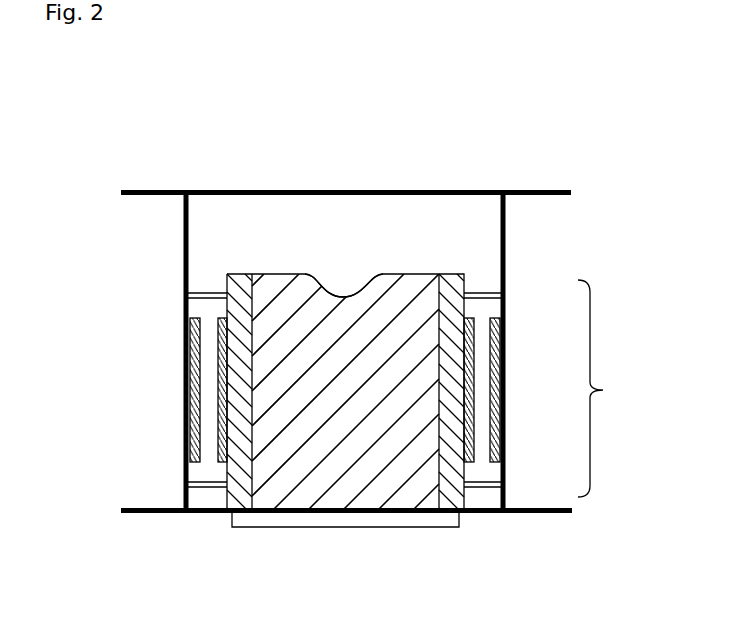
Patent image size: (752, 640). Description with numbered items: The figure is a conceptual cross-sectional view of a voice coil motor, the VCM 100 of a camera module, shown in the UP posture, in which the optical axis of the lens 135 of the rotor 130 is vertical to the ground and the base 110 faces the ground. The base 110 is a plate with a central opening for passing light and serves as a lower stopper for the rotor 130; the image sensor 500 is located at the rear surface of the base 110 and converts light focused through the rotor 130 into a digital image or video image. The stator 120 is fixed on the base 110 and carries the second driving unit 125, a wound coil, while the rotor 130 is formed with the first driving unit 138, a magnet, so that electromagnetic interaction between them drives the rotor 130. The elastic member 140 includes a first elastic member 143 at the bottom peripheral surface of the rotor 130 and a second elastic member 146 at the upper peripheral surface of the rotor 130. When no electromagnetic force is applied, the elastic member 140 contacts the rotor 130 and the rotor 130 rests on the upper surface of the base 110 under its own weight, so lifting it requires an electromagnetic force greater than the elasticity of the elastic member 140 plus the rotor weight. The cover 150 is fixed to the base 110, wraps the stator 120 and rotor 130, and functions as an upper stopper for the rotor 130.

The VCM 100 is at (526, 140).
The base 110 is at (181, 520).
The stator 120 is at (176, 291).
The second driving unit 125 is at (188, 378).
The rotor 130 is at (375, 258).
The lens 135 is at (313, 285).
The first driving unit 138 is at (218, 441).
The elastic member 140 is at (612, 388).
The first elastic member 143 is at (505, 484).
The second elastic member 146 is at (505, 296).
The cover 150 is at (233, 200).
The image sensor 500 is at (300, 520).